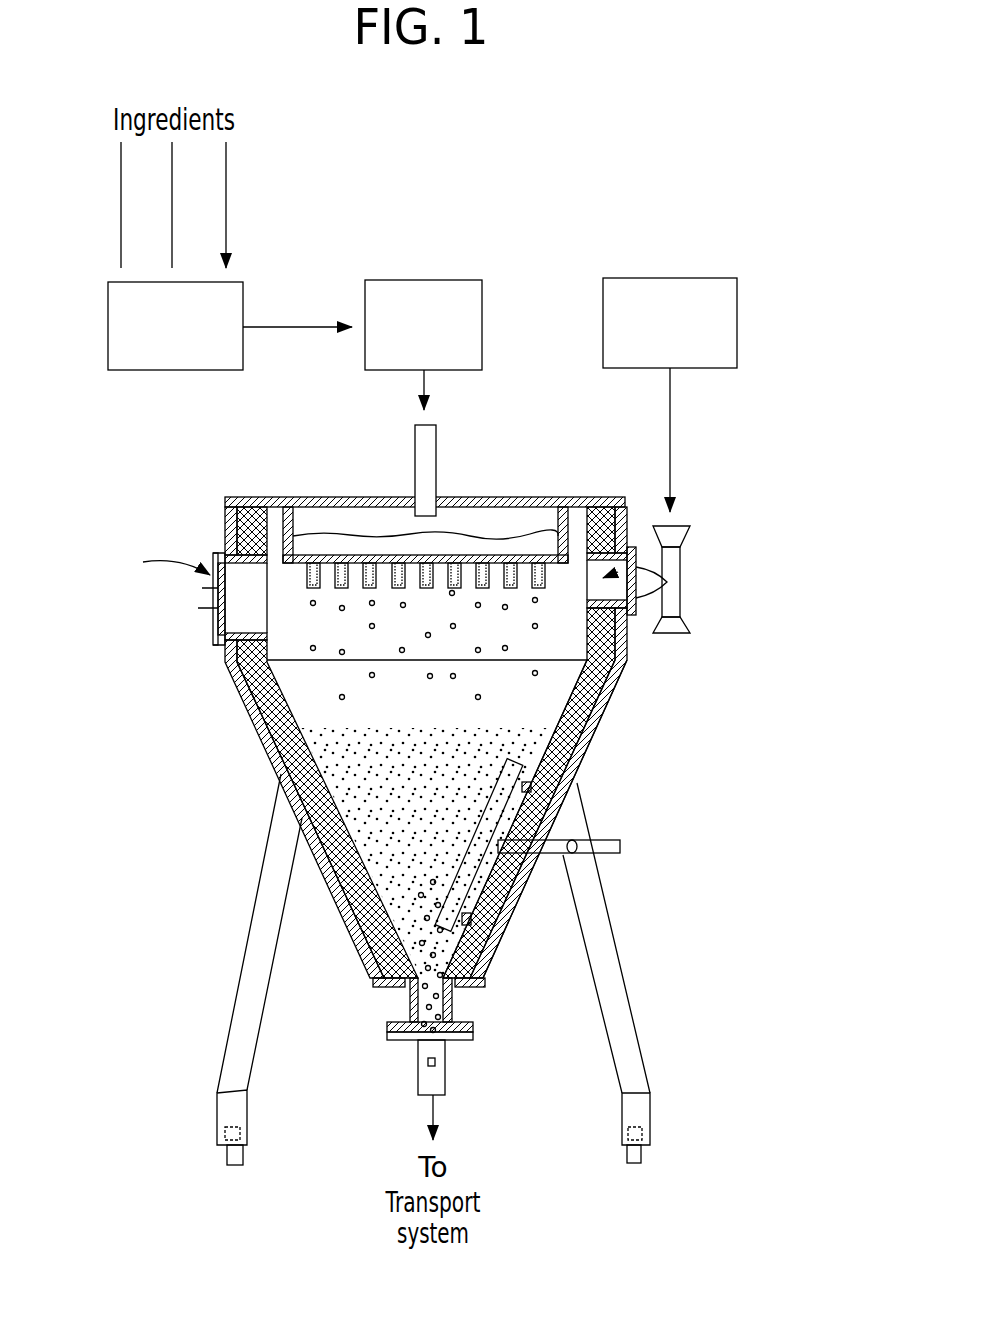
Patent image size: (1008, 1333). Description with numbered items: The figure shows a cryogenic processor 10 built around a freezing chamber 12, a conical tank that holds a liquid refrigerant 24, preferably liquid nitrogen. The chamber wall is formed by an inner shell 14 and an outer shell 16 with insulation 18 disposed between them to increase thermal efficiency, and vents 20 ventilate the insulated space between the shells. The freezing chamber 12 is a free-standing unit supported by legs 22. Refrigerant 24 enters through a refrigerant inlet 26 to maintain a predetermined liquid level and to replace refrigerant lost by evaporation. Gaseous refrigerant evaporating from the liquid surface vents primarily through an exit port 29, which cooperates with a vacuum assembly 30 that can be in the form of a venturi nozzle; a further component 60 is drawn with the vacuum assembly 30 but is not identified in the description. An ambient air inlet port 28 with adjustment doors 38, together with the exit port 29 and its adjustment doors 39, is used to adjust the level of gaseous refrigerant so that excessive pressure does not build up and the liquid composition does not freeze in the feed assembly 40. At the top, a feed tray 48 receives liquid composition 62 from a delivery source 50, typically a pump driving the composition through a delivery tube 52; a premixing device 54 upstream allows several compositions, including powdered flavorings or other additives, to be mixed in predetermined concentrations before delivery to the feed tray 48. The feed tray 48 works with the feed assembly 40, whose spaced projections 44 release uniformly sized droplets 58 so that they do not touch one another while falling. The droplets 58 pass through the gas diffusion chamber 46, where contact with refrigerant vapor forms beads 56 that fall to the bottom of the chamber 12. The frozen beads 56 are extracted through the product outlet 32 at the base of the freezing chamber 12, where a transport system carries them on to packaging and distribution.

The cryogenic processor 10 is at (724, 1218).
The freezing chamber 12 is at (433, 843).
The inner shell 14 is at (577, 768).
The outer shell 16 is at (596, 733).
The insulation 18 is at (583, 752).
The vents 20 is at (397, 993).
The legs 22 is at (629, 1043).
The refrigerant 24 is at (432, 788).
The refrigerant inlet 26 is at (622, 846).
The ambient air inlet port 28 is at (160, 555).
The exit port 29 is at (663, 570).
The vacuum assembly 30 is at (702, 530).
The product outlet 32 is at (445, 1065).
The adjustment doors 38 is at (216, 620).
The adjustment doors 39 is at (632, 612).
The feed assembly 40 is at (505, 538).
The projections 44 is at (310, 592).
The gas diffusion chamber 46 is at (613, 690).
The feed tray 48 is at (298, 556).
The delivery source 50 is at (411, 341).
The delivery tube 52 is at (415, 441).
The premixing device 54 is at (159, 343).
The beads 56 is at (418, 928).
The droplets 58 is at (392, 650).
The controller 60 is at (656, 339).
The liquid composition 62 is at (403, 545).